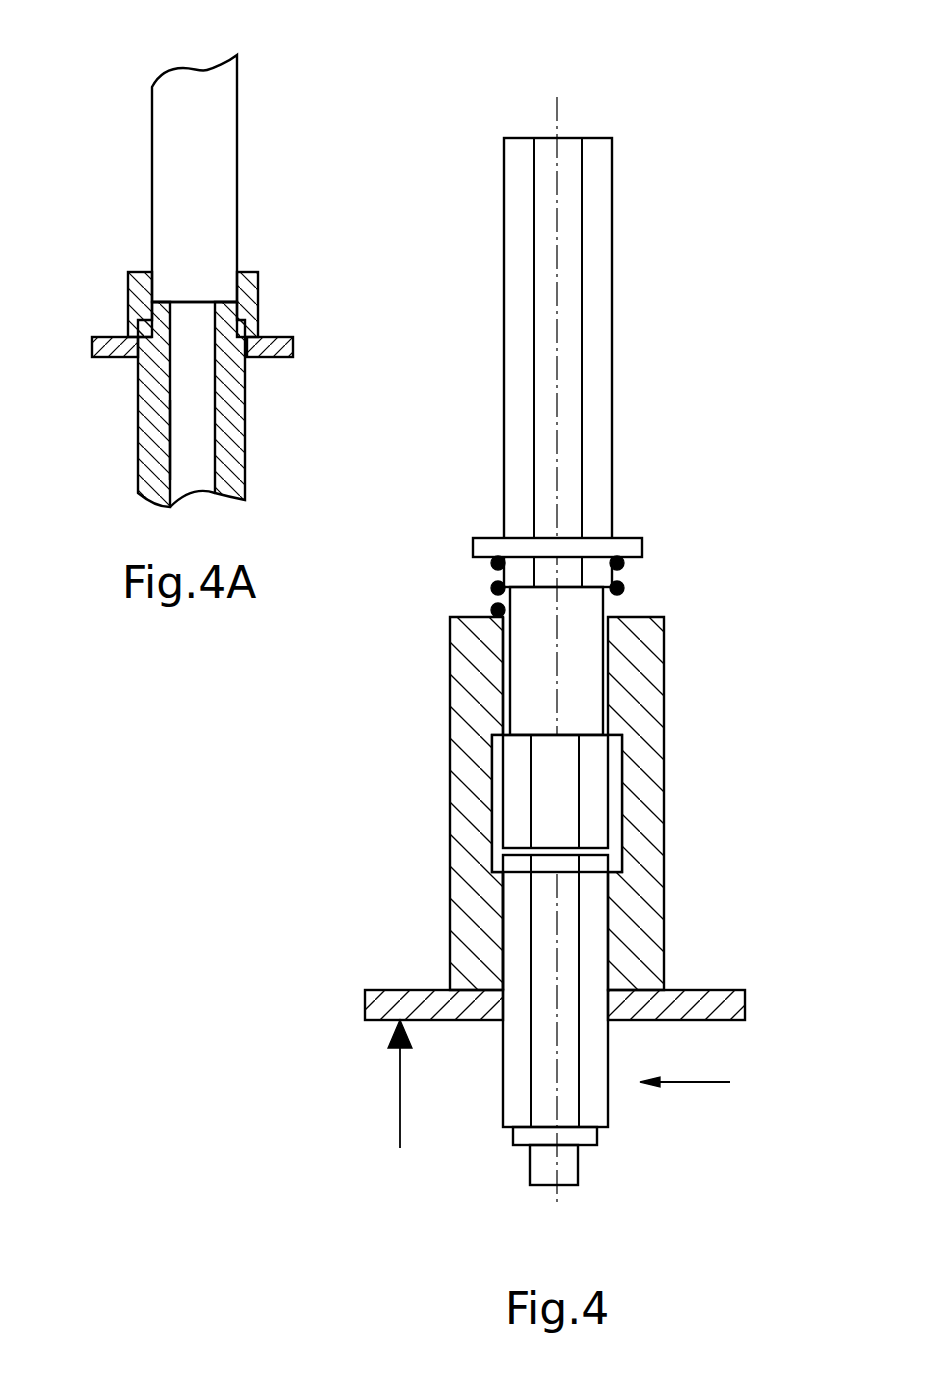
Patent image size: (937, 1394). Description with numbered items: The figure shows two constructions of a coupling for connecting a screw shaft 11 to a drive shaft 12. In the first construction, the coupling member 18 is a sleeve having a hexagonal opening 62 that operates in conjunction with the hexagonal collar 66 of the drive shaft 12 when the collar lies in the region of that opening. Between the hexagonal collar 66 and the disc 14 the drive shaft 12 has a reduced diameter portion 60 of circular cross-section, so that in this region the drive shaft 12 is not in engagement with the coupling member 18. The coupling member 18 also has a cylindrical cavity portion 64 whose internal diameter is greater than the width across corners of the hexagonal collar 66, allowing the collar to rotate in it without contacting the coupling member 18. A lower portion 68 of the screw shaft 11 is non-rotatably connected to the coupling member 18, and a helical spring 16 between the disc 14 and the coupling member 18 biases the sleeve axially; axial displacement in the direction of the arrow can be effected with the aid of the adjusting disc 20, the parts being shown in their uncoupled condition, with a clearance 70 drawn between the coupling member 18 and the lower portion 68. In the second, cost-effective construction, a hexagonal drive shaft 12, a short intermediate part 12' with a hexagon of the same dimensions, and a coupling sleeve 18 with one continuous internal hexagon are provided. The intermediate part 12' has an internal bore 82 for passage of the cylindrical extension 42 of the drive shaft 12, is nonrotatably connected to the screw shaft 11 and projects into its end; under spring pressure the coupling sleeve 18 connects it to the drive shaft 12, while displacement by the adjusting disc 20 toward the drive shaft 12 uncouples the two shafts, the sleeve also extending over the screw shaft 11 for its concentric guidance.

In FIG. 4, the screw shaft 11 is at (717, 1083).
In FIG. 4A, the screw shaft 11 is at (233, 462).
In FIG. 4, the drive shaft 12 is at (649, 362).
In FIG. 4A, the drive shaft 12 is at (246, 154).
In FIG. 4A, the intermediate part 12' is at (93, 384).
In FIG. 4, the disc 14 is at (629, 547).
In FIG. 4, the helical spring 16 is at (620, 590).
In FIG. 4, the coupling member 18 is at (647, 668).
In FIG. 4A, the coupling member 18 is at (257, 288).
In FIG. 4, the adjusting disc 20 is at (690, 1010).
In FIG. 4A, the adjusting disc 20 is at (102, 335).
In FIG. 4, the cylindrical extension 42 is at (565, 1167).
In FIG. 4A, the cylindrical extension 42 is at (185, 432).
In FIG. 4, the reduced diameter portion 60 is at (580, 663).
In FIG. 4, the hexagonal opening 62 is at (503, 680).
In FIG. 4, the cylindrical cavity portion 64 is at (612, 762).
In FIG. 4, the hexagonal collar 66 is at (598, 806).
In FIG. 4, the lower portion 68 is at (592, 925).
In FIG. 4, the clearance 70 is at (522, 957).
In FIG. 4A, the internal bore 82 is at (187, 368).